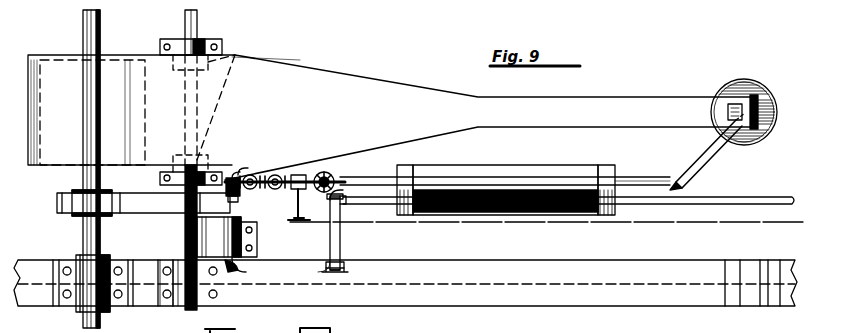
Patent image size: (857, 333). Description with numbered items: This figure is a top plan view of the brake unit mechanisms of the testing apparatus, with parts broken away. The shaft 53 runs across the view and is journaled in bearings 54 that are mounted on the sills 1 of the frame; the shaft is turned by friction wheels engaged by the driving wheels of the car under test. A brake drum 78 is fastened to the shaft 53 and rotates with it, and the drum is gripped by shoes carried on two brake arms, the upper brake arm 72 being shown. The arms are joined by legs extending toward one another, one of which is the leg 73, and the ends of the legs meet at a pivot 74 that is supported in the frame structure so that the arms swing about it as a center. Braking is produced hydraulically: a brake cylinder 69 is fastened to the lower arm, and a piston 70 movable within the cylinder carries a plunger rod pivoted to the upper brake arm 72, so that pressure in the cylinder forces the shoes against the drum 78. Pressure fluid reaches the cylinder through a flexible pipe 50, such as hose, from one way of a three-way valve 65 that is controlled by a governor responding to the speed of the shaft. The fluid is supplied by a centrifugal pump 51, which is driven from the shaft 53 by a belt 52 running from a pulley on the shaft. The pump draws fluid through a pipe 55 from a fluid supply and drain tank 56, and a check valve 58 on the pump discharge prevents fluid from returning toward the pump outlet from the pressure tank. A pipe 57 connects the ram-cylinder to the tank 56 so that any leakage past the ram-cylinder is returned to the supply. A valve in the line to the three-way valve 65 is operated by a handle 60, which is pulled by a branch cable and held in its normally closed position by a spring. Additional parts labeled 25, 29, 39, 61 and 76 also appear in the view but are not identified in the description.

The sills 1 is at (668, 306).
The rail member 25 is at (182, 296).
The pipe fitting 29 is at (270, 178).
The valve 39 is at (312, 178).
The flexible pipe 50 is at (575, 182).
The centrifugal pump 51 is at (215, 240).
The belt 52 is at (142, 205).
The shaft 53 is at (83, 30).
The bearings 54 is at (90, 296).
The pipe 55 is at (342, 248).
The fluid supply and drain tank 56 is at (484, 170).
The pipe 57 is at (738, 196).
The check valve 58 is at (240, 190).
The handle 60 is at (296, 219).
The guide line 61 is at (626, 223).
The three-way valve 65 is at (338, 176).
The brake cylinder 69 is at (730, 82).
The piston 70 is at (746, 94).
The upper brake arm 72 is at (423, 100).
The leg 73 is at (240, 56).
The pivot 74 is at (197, 30).
The bracket 76 is at (190, 48).
The brake drum 78 is at (30, 162).